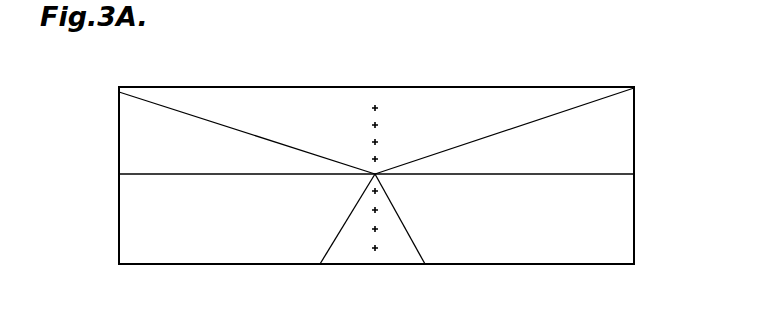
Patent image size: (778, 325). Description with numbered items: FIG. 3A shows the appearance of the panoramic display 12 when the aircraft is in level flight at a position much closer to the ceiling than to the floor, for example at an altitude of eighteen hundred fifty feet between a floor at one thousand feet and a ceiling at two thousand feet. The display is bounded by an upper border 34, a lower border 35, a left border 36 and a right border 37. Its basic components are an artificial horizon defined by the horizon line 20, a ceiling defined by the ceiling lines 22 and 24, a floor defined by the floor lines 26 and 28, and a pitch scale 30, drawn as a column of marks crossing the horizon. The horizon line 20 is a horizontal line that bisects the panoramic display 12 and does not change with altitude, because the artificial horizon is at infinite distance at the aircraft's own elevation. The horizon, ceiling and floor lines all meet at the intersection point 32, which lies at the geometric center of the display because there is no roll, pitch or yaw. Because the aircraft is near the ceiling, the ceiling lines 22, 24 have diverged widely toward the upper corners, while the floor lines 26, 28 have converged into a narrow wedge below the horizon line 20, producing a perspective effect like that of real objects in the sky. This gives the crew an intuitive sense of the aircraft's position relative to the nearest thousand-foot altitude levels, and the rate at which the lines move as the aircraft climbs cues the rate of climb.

The panoramic display 12 is at (118, 124).
The horizon line 20 is at (600, 174).
The ceiling line 22 is at (143, 99).
The ceiling line 24 is at (497, 138).
The floor line 26 is at (333, 247).
The floor line 28 is at (418, 250).
The pitch scale 30 is at (378, 108).
The intersection point 32 is at (375, 174).
The upper border 34 is at (210, 87).
The lower border 35 is at (210, 264).
The left border 36 is at (118, 162).
The right border 37 is at (638, 218).